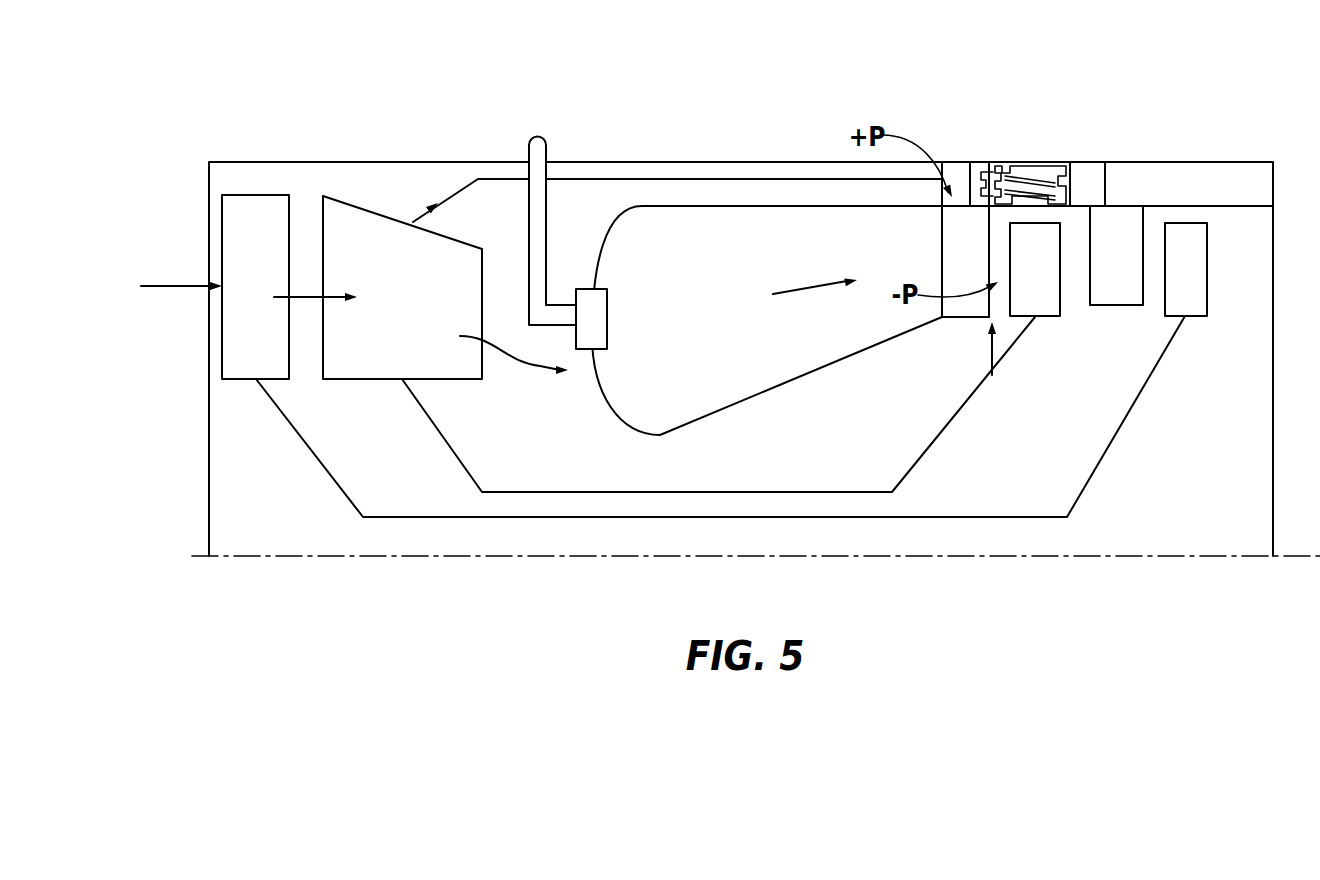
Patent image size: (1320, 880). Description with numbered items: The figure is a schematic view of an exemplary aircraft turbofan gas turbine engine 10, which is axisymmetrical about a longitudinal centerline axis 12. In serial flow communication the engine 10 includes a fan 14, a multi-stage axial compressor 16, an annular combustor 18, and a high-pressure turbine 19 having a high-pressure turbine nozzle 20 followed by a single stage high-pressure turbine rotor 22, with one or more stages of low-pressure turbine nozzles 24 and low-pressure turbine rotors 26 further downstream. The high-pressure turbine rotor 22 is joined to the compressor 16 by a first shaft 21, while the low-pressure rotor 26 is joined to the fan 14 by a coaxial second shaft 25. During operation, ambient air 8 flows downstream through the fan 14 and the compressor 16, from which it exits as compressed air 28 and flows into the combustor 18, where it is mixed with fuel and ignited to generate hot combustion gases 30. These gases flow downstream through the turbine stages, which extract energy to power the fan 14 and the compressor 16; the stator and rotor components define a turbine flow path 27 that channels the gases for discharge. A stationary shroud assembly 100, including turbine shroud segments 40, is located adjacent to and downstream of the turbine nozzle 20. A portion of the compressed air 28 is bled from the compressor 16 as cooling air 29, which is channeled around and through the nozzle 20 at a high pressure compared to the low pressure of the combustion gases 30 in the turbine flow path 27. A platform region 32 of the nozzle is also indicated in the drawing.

The ambient air 8 is at (153, 285).
The aircraft turbofan gas turbine engine 10 is at (431, 590).
The centerline axis 12 is at (1117, 556).
The fan 14 is at (255, 195).
The multi-stage axial compressor 16 is at (370, 210).
The annular combustor 18 is at (703, 207).
The high-pressure turbine 19 is at (992, 375).
The high-pressure turbine nozzle 20 is at (970, 200).
The first shaft 21 is at (697, 492).
The high-pressure turbine rotor 22 is at (1052, 318).
The low-pressure turbine nozzle 24 is at (1105, 180).
The second shaft 25 is at (937, 517).
The low-pressure turbine rotor 26 is at (1190, 317).
The turbine flow path 27 is at (1000, 262).
The compressed air 28 is at (518, 368).
The cooling air 29 is at (590, 180).
The hot combustion gases 30 is at (798, 294).
The vane platform 32 is at (968, 318).
The turbine shroud segments 40 is at (1037, 173).
The shroud assembly 100 is at (998, 148).